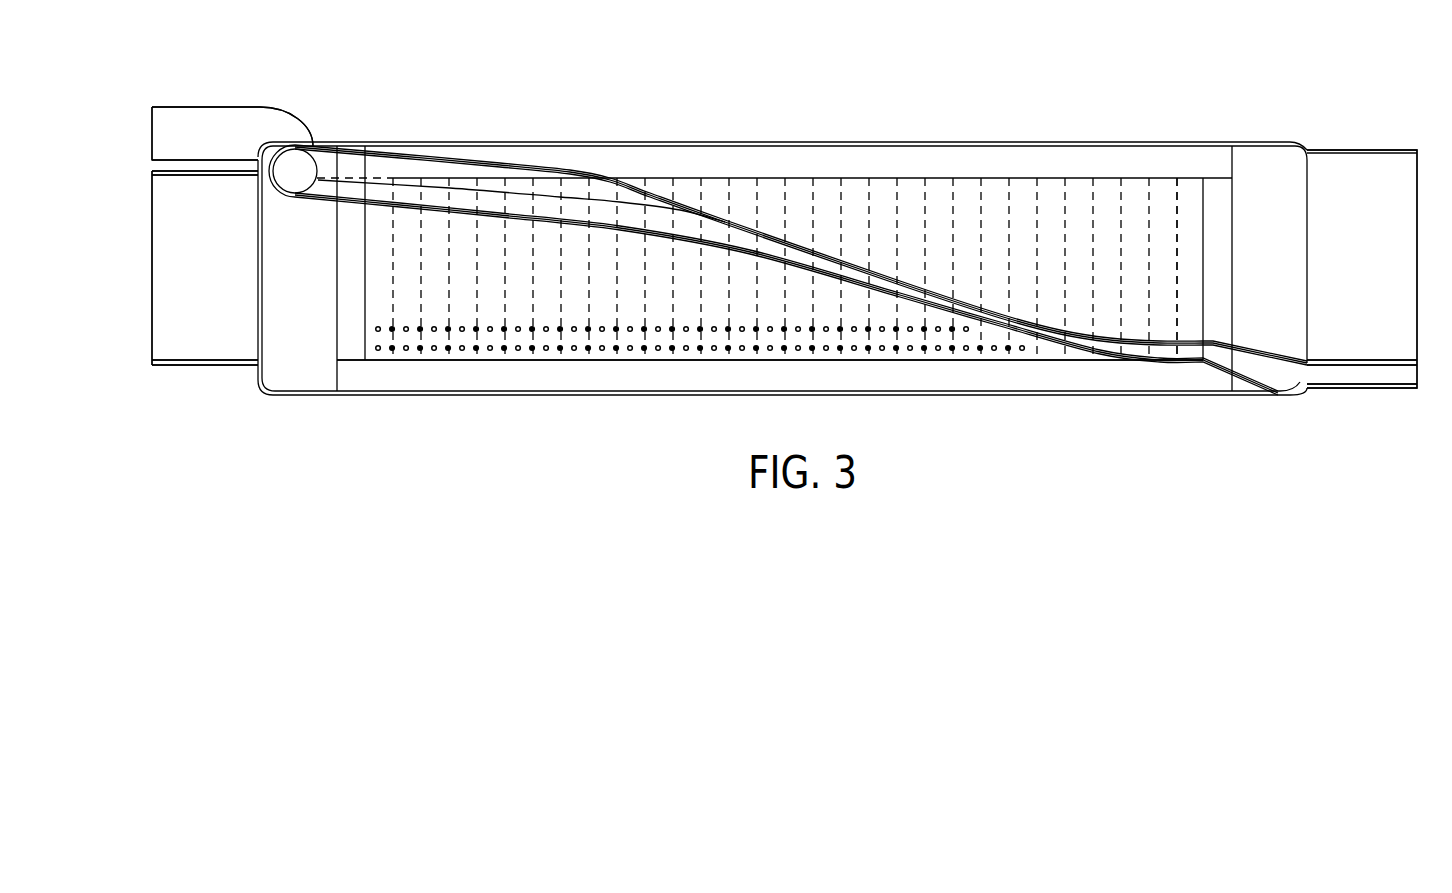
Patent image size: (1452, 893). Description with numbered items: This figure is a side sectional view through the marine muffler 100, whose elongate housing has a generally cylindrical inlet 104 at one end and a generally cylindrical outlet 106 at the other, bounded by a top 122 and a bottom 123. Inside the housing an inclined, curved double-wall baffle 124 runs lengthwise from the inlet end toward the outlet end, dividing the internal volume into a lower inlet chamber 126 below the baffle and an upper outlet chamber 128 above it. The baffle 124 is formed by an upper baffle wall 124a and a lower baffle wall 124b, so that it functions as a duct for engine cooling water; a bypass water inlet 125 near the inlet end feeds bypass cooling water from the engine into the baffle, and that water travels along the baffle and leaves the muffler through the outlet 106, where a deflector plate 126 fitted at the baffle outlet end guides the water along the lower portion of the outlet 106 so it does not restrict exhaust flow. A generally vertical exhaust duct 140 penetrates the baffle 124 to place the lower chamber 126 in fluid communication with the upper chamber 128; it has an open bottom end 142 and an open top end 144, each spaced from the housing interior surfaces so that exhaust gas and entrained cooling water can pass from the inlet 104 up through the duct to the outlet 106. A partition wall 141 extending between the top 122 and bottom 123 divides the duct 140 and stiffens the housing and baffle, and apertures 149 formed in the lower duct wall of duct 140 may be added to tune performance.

The muffler 100 is at (628, 86).
The inlet 104 is at (200, 366).
The outlet 106 is at (1350, 150).
The top 122 is at (728, 142).
The bottom 123 is at (572, 396).
The double-wall baffle 124 is at (813, 243).
The upper baffle wall 124a is at (885, 265).
The lower baffle wall 124b is at (1085, 360).
The bypass water inlet 125 is at (220, 107).
The lower inlet chamber 126 is at (350, 276).
The upper outlet chamber 128 is at (1175, 255).
The exhaust duct 140 is at (1002, 172).
The partition wall 141 is at (1182, 157).
The open bottom end 142 is at (1080, 178).
The open top end 144 is at (1020, 362).
The apertures 149 is at (462, 352).